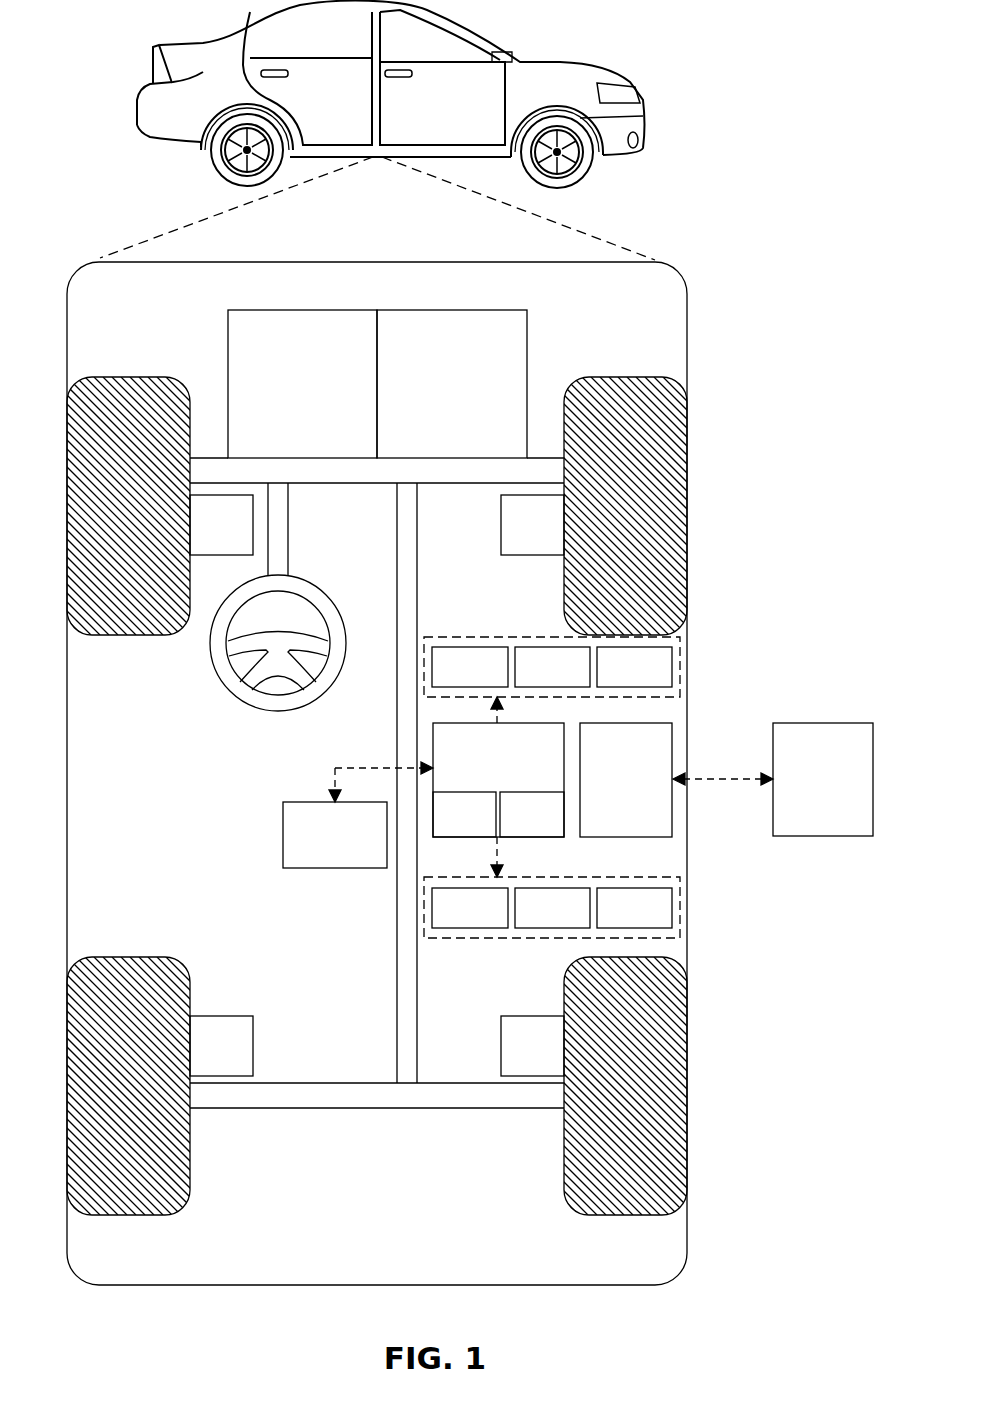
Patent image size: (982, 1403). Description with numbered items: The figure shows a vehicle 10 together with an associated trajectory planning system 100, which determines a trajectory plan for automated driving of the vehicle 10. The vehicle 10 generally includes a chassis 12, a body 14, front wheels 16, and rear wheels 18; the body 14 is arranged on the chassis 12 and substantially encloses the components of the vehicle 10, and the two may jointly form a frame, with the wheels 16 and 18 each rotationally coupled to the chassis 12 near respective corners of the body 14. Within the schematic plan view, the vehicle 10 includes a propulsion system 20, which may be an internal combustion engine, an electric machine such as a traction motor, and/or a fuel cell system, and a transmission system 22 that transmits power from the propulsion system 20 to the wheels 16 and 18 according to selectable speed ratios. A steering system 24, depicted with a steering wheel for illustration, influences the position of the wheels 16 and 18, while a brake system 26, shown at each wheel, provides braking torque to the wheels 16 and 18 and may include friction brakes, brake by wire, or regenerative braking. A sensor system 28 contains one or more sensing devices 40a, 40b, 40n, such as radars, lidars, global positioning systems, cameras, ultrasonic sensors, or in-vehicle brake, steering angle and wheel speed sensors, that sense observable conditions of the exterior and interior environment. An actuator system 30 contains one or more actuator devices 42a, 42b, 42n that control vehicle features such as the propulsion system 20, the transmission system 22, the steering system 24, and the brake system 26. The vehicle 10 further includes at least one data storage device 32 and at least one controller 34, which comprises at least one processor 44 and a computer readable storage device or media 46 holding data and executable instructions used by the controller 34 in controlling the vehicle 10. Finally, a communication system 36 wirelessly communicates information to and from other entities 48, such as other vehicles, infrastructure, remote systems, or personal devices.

The vehicle 10 is at (148, 78).
The trajectory planning system 100 is at (708, 284).
The chassis 12 is at (397, 952).
The body 14 is at (67, 735).
The front wheels 16 is at (125, 377).
The rear wheels 18 is at (127, 1213).
The propulsion system 20 is at (288, 397).
The transmission system 22 is at (438, 397).
The steering system 24 is at (292, 550).
The brake system 26 is at (208, 539).
The sensor system 28 is at (552, 651).
The actuator system 30 is at (552, 927).
The data storage device 32 is at (321, 849).
The controller 34 is at (498, 780).
The communication system 36 is at (612, 793).
The sensing device 40a is at (450, 681).
The sensing device 40b is at (532, 681).
The sensing device 40n is at (614, 681).
The actuator device 42a is at (450, 922).
The actuator device 42b is at (532, 922).
The actuator device 42n is at (614, 922).
The processor 44 is at (450, 826).
The computer readable storage device or media 46 is at (518, 826).
The other entities 48 is at (809, 793).